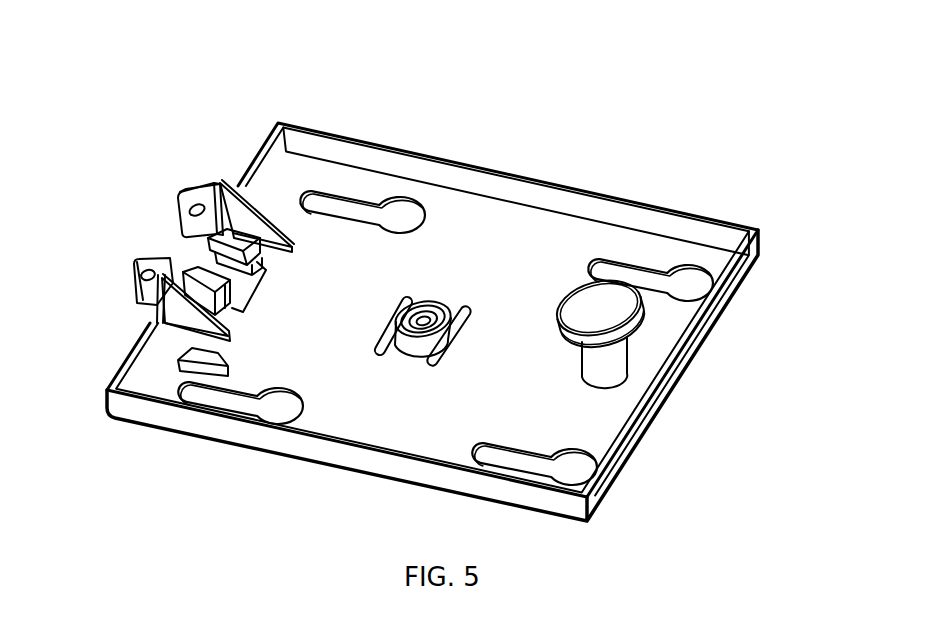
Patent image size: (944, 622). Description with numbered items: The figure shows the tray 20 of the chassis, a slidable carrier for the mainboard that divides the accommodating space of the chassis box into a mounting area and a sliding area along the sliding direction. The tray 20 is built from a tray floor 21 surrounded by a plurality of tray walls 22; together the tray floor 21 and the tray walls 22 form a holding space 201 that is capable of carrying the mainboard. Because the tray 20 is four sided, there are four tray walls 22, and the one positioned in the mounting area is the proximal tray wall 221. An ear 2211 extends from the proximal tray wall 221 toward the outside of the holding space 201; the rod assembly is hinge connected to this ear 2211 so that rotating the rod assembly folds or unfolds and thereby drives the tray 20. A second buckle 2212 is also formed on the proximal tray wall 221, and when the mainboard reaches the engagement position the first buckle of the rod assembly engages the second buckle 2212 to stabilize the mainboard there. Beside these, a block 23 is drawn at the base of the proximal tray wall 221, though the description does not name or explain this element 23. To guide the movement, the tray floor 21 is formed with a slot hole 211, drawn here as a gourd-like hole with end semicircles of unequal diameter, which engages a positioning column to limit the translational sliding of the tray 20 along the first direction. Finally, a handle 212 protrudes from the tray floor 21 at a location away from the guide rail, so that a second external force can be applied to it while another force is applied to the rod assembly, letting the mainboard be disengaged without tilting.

The tray 20 is at (777, 103).
The tray floor 21 is at (343, 432).
The tray walls 22 is at (357, 157).
The holding space 201 is at (476, 238).
The slot hole 211 is at (645, 272).
The handle 212 is at (612, 362).
The proximal tray wall 221 is at (258, 173).
The ear 2211 is at (198, 202).
The second buckle 2212 is at (160, 272).
The limiting block 23 is at (238, 288).